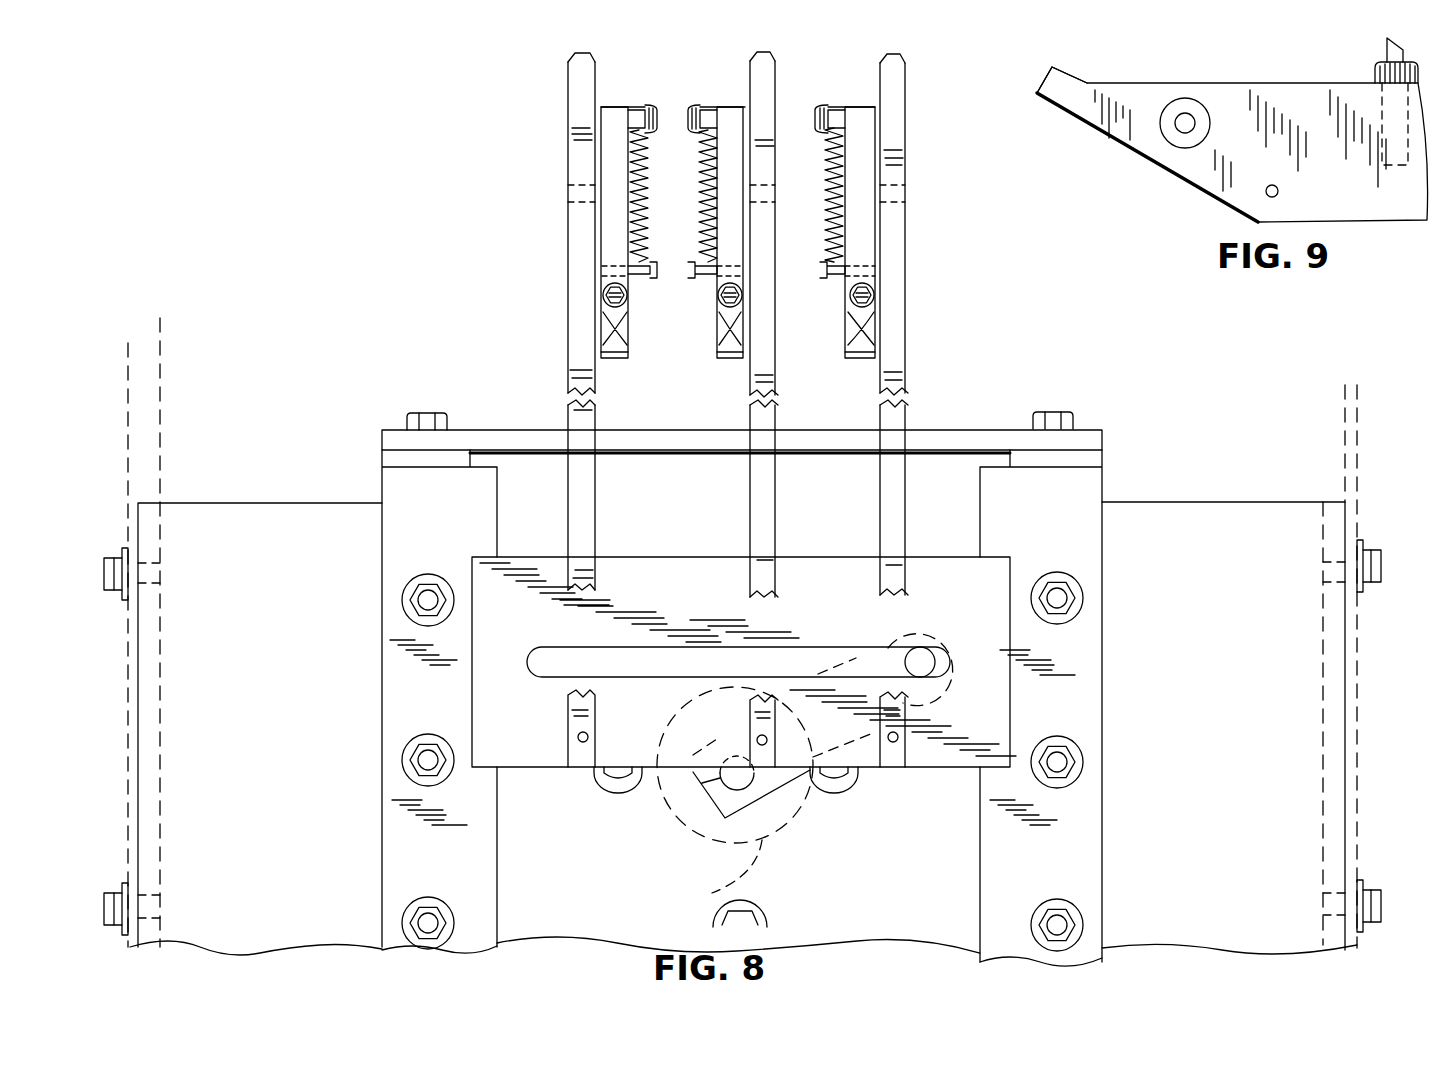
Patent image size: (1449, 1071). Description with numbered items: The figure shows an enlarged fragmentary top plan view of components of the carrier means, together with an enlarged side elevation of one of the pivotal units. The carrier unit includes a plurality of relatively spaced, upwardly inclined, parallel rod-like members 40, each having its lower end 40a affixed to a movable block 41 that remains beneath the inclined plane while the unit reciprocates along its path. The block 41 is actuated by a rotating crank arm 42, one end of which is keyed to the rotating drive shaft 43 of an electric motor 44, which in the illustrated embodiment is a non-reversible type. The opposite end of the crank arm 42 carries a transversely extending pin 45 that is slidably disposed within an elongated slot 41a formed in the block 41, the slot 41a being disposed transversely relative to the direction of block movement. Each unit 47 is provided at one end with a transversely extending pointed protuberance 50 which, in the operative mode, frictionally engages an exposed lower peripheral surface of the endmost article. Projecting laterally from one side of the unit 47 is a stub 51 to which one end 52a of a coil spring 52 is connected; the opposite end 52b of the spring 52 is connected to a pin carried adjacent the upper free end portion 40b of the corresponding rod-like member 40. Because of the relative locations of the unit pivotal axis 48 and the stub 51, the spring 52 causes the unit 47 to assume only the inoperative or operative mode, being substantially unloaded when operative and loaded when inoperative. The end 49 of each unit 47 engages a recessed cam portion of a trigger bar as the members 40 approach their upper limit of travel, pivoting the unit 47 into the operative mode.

In FIG. 8, the rod-like member 40 is at (746, 522).
In FIG. 8, the lower end 40a is at (570, 757).
In FIG. 8, the upper free end portion 40b is at (900, 87).
In FIG. 8, the movable block 41 is at (532, 721).
In FIG. 8, the elongated slot 41a is at (557, 662).
In FIG. 8, the crank arm 42 is at (763, 790).
In FIG. 8, the drive shaft 43 is at (720, 793).
In FIG. 8, the electric motor 44 is at (774, 783).
In FIG. 8, the pin 45 is at (922, 665).
In FIG. 8, the unit 47 is at (865, 343).
In FIG. 9, the unit 47 is at (1175, 191).
In FIG. 9, the unit pivotal axis 48 is at (1188, 115).
In FIG. 8, the end 49 is at (865, 120).
In FIG. 9, the end 49 is at (1058, 92).
In FIG. 8, the pointed protuberance 50 is at (867, 292).
In FIG. 9, the pointed protuberance 50 is at (1385, 44).
In FIG. 8, the stub 51 is at (855, 265).
In FIG. 9, the stub 51 is at (1266, 192).
In FIG. 8, the coil spring 52 is at (828, 194).
In FIG. 8, the one end of spring 52a is at (830, 260).
In FIG. 8, the opposite end of spring 52b is at (828, 142).